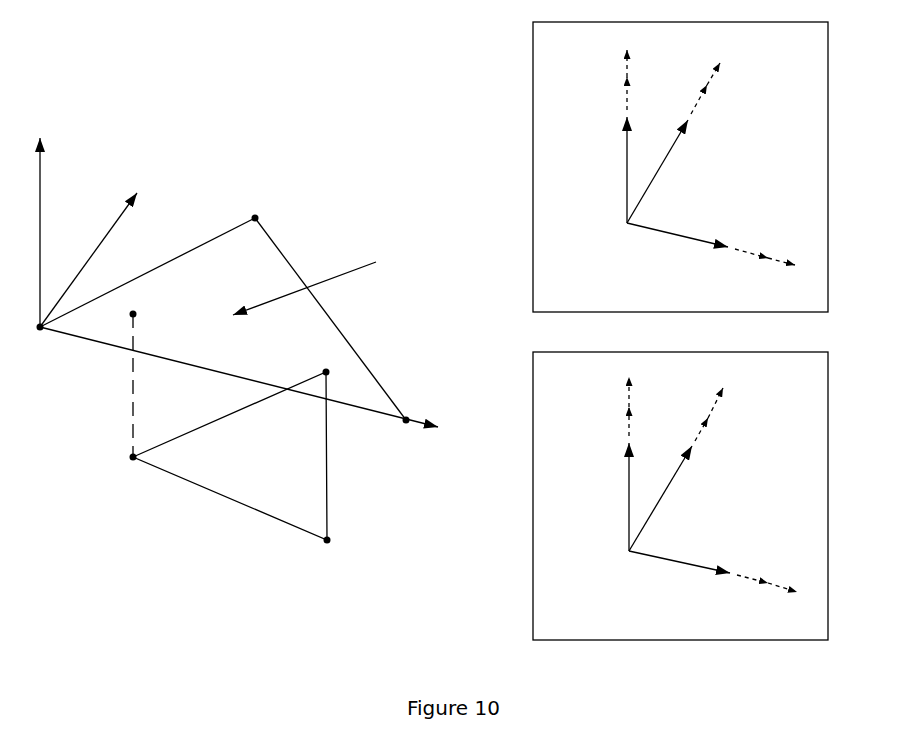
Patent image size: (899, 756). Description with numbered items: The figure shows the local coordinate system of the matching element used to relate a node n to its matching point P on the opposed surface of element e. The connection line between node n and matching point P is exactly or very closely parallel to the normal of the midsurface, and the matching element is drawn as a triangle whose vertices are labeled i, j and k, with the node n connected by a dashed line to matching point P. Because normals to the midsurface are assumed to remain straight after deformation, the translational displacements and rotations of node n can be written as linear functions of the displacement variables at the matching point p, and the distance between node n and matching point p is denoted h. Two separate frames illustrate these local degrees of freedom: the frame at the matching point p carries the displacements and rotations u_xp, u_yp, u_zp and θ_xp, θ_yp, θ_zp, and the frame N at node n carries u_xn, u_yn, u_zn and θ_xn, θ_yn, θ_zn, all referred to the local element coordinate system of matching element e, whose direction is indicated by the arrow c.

The origin point i of the global coordinate frame i is at (244, 280).
The point j on the X axis j is at (406, 432).
The point k is at (328, 308).
The direction vector c is at (308, 282).
The matching point P is at (155, 374).
The node n is at (220, 456).
The matching point p is at (680, 167).
The local coordinate frame at point n N is at (680, 496).